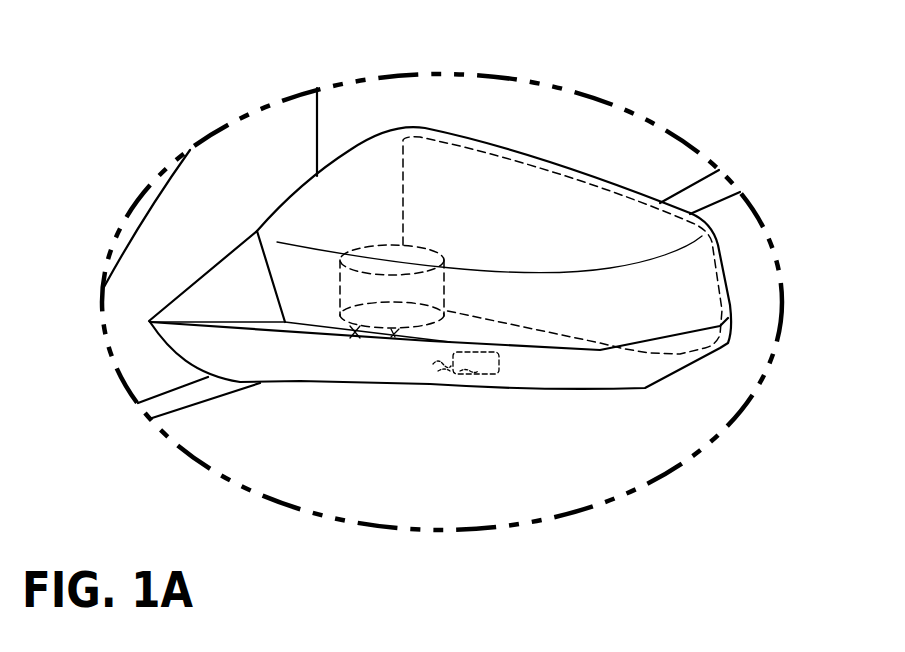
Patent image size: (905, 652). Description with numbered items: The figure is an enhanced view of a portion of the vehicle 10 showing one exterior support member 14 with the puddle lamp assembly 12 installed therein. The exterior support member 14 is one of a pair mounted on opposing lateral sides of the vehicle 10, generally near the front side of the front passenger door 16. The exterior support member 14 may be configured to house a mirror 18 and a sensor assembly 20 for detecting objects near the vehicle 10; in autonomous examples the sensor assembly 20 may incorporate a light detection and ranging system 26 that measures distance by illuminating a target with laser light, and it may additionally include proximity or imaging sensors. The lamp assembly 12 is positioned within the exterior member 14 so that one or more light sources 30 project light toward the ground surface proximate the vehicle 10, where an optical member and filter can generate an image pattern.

The vehicle 10 is at (190, 121).
The puddle lamp assembly 12 is at (497, 388).
The exterior support member 14 is at (522, 187).
The front passenger door 16 is at (745, 277).
The mirror 18 is at (623, 183).
The sensor assembly 20 is at (355, 332).
The light detection and ranging (LIDAR) system 26 is at (395, 333).
The light source 30 is at (467, 382).